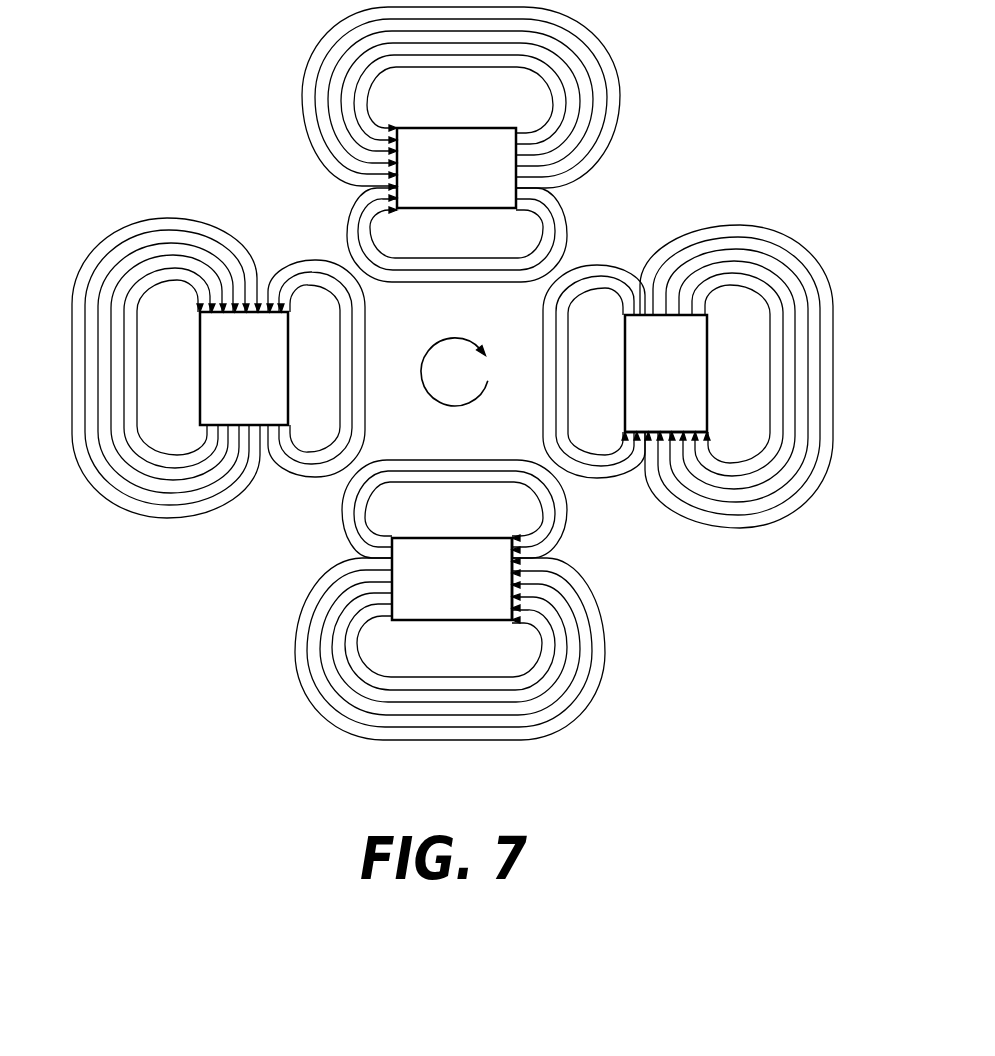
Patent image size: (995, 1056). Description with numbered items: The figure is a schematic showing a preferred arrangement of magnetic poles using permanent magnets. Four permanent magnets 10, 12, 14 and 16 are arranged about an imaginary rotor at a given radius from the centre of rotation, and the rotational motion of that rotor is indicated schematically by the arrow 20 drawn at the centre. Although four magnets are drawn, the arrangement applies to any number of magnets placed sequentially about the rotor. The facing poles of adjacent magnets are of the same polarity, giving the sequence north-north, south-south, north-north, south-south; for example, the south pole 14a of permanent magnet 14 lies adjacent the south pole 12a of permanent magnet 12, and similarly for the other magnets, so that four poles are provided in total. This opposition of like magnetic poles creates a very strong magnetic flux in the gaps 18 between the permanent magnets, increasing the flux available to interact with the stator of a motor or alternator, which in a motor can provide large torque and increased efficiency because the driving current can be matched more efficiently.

The permanent magnet 10 is at (217, 358).
The permanent magnet 12 is at (427, 603).
The south pole 12a is at (498, 610).
The permanent magnet 14 is at (690, 372).
The south pole 14a is at (692, 418).
The permanent magnet 16 is at (493, 200).
The gaps 18 is at (290, 213).
The arrow 20 is at (422, 360).